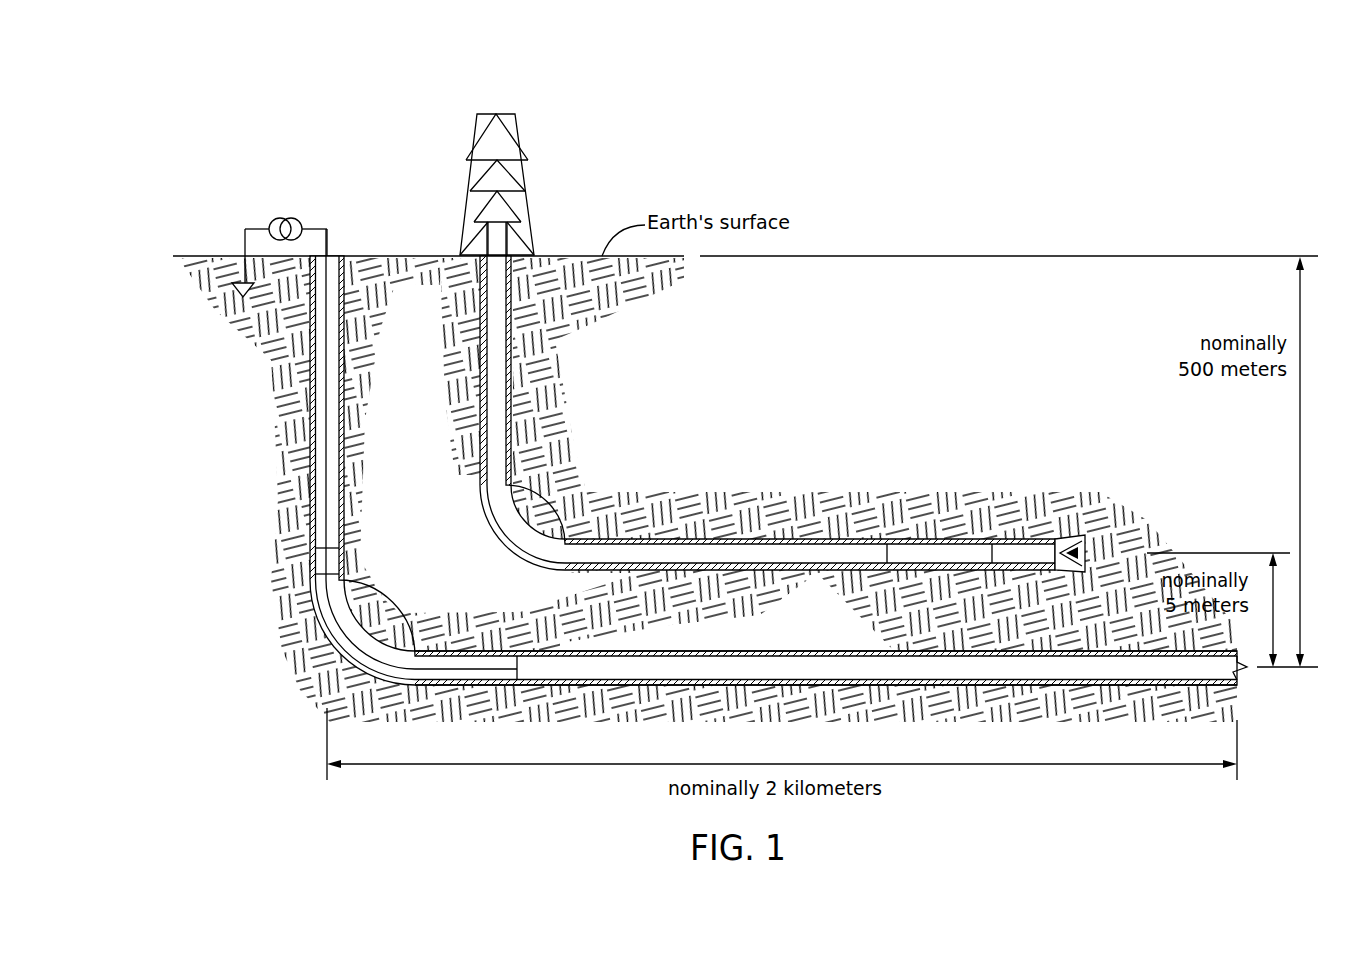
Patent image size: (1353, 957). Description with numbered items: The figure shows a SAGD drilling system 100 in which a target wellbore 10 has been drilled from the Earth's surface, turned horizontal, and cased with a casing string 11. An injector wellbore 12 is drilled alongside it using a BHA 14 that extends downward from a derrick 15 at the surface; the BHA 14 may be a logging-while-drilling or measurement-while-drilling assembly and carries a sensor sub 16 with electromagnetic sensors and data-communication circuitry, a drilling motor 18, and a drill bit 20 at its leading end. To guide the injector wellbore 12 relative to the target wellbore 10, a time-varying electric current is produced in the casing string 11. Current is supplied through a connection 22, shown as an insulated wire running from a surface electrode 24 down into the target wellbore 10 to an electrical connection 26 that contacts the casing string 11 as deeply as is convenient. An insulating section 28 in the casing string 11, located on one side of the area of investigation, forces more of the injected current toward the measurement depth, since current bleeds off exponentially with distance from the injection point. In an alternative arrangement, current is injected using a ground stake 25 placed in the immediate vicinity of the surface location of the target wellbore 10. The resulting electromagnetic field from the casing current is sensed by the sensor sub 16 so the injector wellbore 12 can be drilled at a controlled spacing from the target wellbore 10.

The SAGD drilling system 100 is at (235, 100).
The derrick 15 is at (520, 137).
The surface electrode 24 is at (273, 220).
The ground stake 25 is at (240, 290).
The injector wellbore 12 is at (508, 368).
The casing string 11 is at (316, 373).
The target wellbore 10 is at (320, 437).
The BHA 14 is at (966, 476).
The sensor sub 16 is at (913, 547).
The drilling motor 18 is at (1028, 547).
The drill bit 20 is at (1090, 553).
The insulating section 28 is at (320, 560).
The electrical connection 26 is at (515, 667).
The connection 22 is at (335, 652).